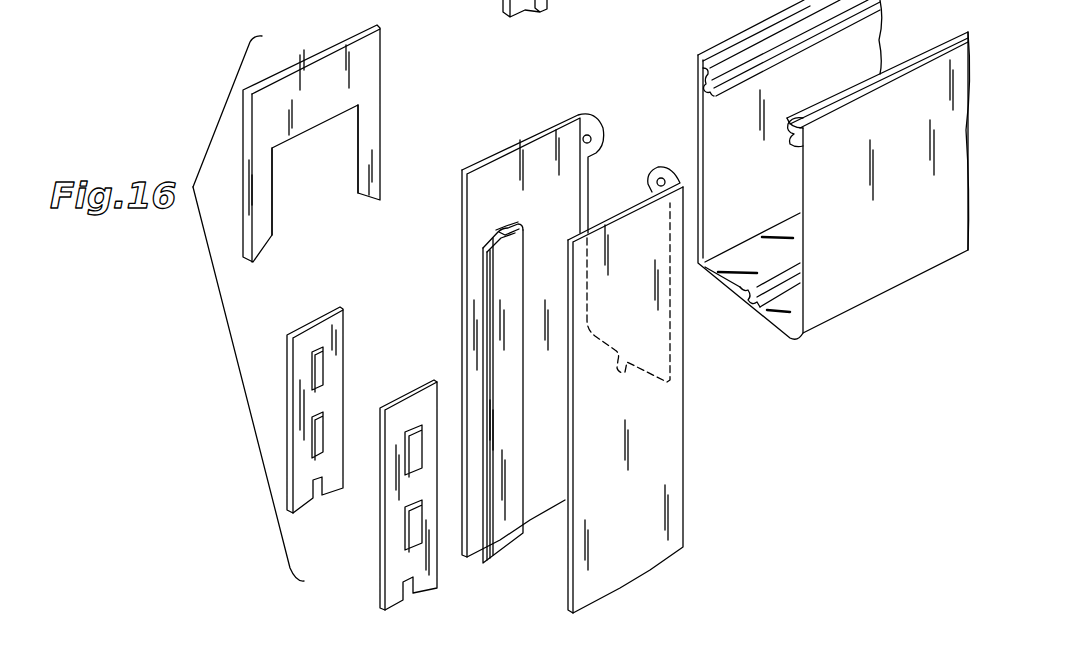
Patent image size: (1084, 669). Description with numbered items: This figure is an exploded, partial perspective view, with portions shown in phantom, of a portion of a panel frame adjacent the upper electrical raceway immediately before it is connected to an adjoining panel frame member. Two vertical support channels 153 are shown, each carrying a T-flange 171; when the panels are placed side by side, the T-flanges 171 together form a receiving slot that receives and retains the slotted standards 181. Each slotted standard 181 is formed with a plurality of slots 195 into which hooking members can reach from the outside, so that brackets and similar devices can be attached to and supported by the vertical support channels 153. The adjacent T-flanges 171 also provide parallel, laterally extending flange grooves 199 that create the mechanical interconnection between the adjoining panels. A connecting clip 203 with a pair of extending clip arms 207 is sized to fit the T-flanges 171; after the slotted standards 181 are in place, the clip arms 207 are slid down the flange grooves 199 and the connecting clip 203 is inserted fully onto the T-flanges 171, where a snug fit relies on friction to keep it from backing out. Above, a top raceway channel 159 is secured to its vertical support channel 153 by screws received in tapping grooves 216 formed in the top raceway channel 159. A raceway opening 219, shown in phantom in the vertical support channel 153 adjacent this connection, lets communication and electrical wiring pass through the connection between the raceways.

The vertical support channel 153 is at (478, 206).
The top raceway channel 159 is at (885, 266).
The T-flange 171 is at (483, 318).
The slotted standard 181 is at (320, 321).
The slot 195 is at (400, 430).
The flange groove 199 is at (512, 227).
The connecting clip 203 is at (303, 80).
The clip arm 207 is at (367, 170).
The tapping groove 216 is at (703, 82).
The raceway opening 219 is at (588, 188).